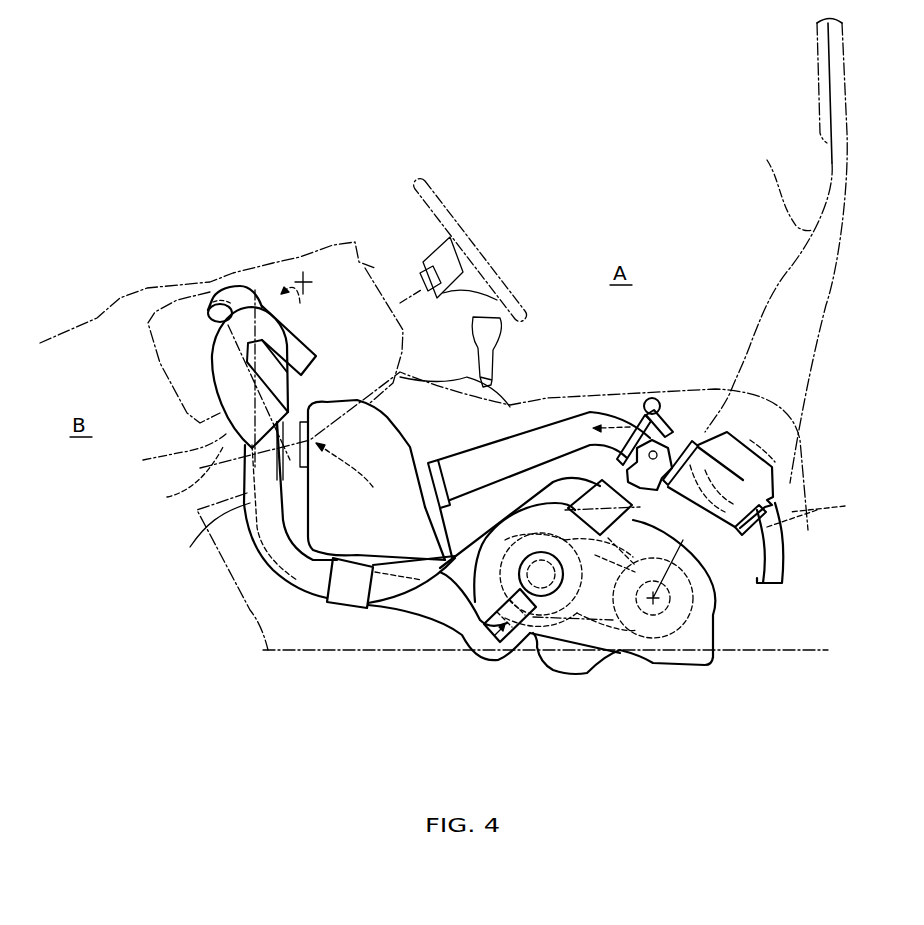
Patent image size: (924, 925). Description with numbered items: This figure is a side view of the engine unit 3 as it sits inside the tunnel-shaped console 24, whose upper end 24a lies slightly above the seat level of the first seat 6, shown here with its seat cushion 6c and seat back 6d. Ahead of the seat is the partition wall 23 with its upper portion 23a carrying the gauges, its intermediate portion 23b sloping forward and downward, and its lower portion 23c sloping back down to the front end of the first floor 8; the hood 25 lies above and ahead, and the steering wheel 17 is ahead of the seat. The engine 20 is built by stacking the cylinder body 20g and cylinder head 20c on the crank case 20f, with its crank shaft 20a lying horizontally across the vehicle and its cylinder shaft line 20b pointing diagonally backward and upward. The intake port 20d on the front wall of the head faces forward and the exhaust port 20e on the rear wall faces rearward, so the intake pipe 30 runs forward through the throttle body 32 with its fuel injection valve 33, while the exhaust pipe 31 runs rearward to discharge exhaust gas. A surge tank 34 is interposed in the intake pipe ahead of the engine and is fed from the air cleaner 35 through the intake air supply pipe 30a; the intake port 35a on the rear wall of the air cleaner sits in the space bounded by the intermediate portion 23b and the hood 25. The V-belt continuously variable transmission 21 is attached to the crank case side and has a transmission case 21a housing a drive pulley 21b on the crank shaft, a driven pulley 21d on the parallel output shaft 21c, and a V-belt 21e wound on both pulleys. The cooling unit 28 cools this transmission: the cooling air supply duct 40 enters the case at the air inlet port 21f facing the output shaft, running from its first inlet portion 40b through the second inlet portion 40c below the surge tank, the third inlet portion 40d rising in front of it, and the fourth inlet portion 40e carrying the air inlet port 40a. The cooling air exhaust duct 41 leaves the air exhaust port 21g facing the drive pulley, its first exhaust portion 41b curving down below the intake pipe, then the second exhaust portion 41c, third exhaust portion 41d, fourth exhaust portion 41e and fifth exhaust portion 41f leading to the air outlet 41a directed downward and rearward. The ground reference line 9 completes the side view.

The engine unit 3 is at (692, 406).
The first seat 6 is at (788, 273).
The seat cushion 6c is at (547, 397).
The seat back 6d is at (777, 186).
The first floor 8 is at (388, 652).
The rear wheel axis 9 is at (787, 650).
The steering wheel 17 is at (440, 192).
The engine 20 is at (712, 434).
The crank shaft 20a is at (665, 657).
The cylinder shaft line 20b is at (750, 437).
The cylinder head 20c is at (716, 532).
The intake port 20d is at (647, 471).
The exhaust port 20e is at (826, 510).
The crank case 20f is at (720, 630).
The cylinder body 20g is at (722, 598).
The V-belt continuously variable transmission 21 is at (715, 623).
The transmission case 21a is at (720, 640).
The drive pulley 21b is at (617, 633).
The output shaft 21c is at (555, 635).
The driven pulley 21d is at (510, 650).
The V-belt 21e is at (583, 633).
The air inlet port 21f is at (463, 615).
The air exhaust port 21g is at (584, 502).
The partition wall 23 is at (376, 480).
The upper portion 23a is at (375, 268).
The intermediate portion 23b is at (368, 466).
The lower portion 23c is at (243, 633).
The console 24 is at (609, 394).
The upper end 24a is at (583, 400).
The hood 25 is at (143, 290).
The cooling unit 28 is at (250, 558).
The intake pipe 30 is at (572, 415).
The intake air supply pipe 30a is at (164, 454).
The exhaust pipe 31 is at (788, 558).
The throttle body 32 is at (681, 434).
The fuel injection valve 33 is at (667, 406).
The surge tank 34 is at (403, 430).
The air cleaner 35 is at (178, 298).
The intake port 35a is at (318, 283).
The cooling air supply duct 40 is at (388, 613).
The air inlet port 40a is at (206, 300).
The first inlet portion 40b is at (490, 663).
The second inlet portion 40c is at (378, 608).
The third inlet portion 40d is at (290, 478).
The fourth inlet portion 40e is at (237, 287).
The cooling air exhaust duct 41 is at (419, 593).
The air outlet 41a is at (312, 382).
The first exhaust portion 41b is at (470, 480).
The second exhaust portion 41c is at (320, 598).
The third exhaust portion 41d is at (197, 532).
The fourth exhaust portion 41e is at (174, 477).
The fifth exhaust portion 41f is at (306, 340).